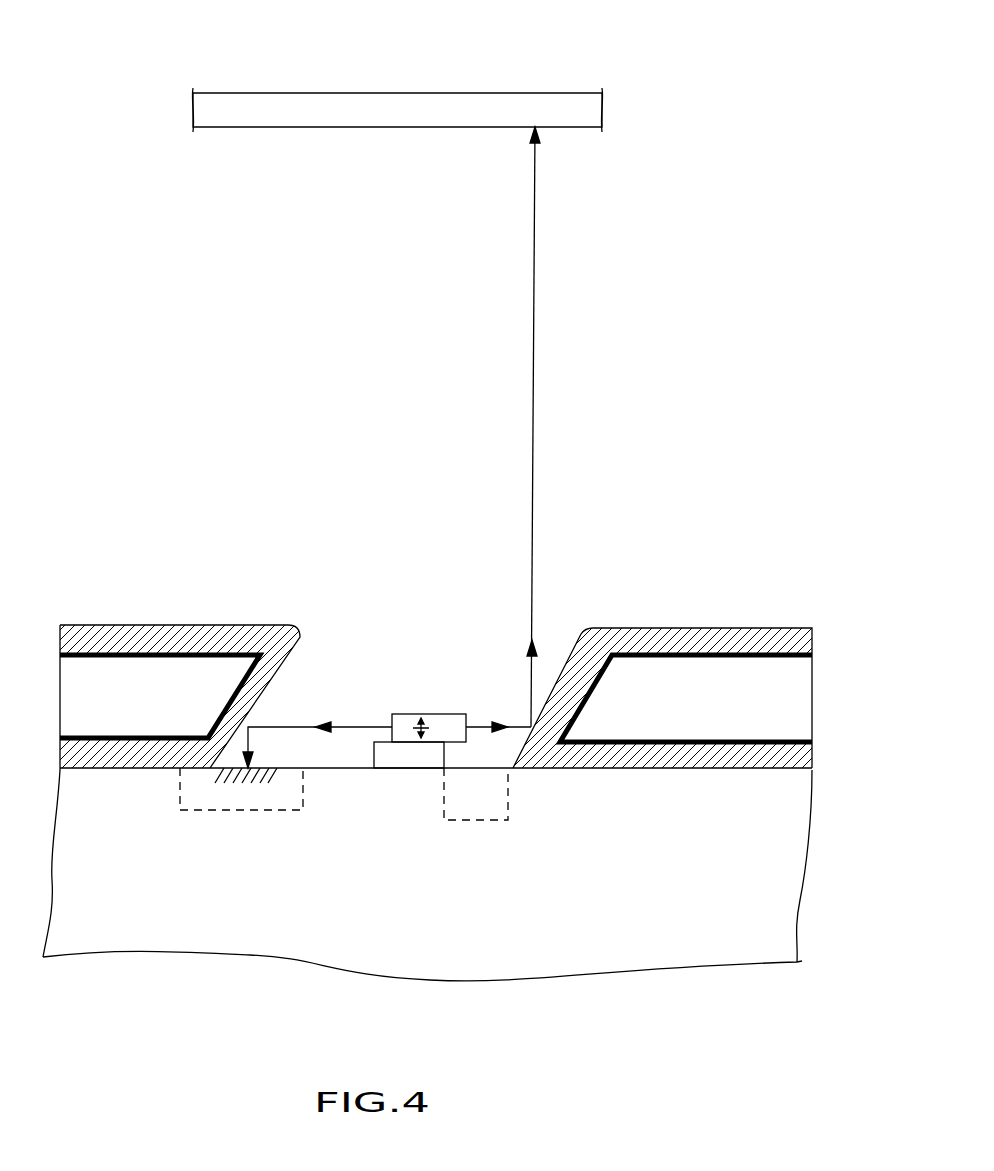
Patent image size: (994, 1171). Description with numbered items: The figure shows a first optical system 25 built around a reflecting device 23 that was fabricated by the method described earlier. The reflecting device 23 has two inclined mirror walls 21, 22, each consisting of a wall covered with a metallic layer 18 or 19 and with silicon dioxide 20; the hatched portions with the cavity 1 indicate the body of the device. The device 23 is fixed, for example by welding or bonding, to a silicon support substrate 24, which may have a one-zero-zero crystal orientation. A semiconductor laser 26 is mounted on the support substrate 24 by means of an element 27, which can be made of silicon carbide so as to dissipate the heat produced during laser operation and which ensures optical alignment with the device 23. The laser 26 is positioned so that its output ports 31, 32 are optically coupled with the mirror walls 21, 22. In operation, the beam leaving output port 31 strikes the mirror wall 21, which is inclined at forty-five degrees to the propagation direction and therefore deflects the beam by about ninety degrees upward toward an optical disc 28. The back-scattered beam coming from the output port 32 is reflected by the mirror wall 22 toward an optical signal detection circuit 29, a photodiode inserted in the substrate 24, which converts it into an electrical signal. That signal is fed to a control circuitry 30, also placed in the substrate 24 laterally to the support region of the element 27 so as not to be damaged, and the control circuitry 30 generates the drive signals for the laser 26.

The hollow space 1 is at (141, 710).
The metallic layer 18 is at (705, 655).
The metallic layer 19 is at (192, 633).
The silicon dioxide 20 is at (128, 627).
The mirror wall 21 is at (573, 648).
The mirror wall 22 is at (288, 673).
The reflecting device 23 is at (92, 612).
The silicon support substrate 24 is at (787, 870).
The optical system 25 is at (128, 135).
The semiconductor laser 26 is at (405, 714).
The element 27 is at (417, 760).
The optical disc 28 is at (490, 93).
The optical signal detection circuit 29 is at (180, 812).
The control circuitry 30 is at (508, 810).
The output port 31 is at (467, 720).
The output port 32 is at (392, 722).